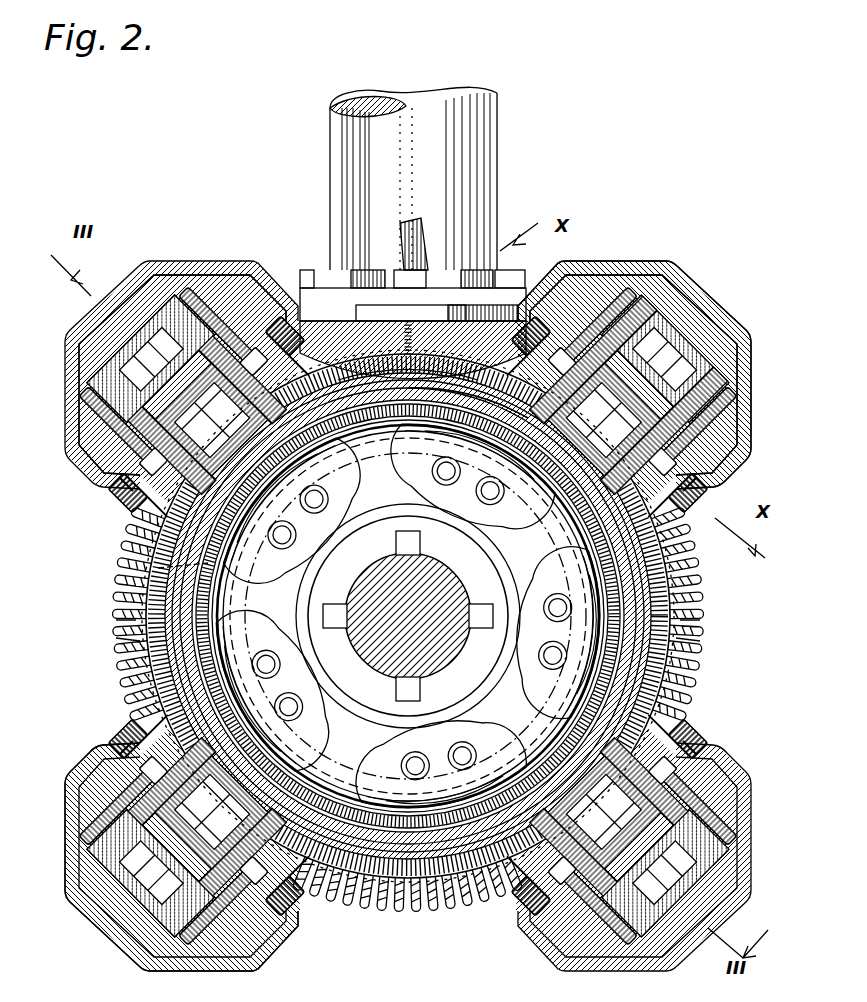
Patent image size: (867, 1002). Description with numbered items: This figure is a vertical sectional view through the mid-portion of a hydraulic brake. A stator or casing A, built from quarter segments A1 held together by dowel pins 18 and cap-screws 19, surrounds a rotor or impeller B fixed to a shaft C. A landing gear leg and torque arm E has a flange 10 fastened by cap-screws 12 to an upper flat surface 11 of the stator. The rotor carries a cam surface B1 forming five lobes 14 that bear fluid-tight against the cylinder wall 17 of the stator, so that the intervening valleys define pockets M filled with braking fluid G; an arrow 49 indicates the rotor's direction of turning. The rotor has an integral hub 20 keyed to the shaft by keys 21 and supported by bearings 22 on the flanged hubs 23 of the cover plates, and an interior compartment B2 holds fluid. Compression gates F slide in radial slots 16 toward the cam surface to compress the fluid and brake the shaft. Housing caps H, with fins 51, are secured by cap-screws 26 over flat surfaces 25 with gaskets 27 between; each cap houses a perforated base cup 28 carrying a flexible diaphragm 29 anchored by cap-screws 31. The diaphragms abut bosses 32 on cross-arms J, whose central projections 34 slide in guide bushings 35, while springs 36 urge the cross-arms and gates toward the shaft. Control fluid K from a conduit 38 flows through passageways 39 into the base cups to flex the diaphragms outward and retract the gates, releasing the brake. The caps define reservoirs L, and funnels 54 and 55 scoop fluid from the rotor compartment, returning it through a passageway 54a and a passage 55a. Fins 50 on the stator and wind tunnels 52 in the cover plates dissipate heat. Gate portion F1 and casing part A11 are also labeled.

The landing gear leg and torque arm E is at (490, 128).
The conduit 38 is at (398, 222).
The flange 10 is at (295, 280).
The upper flat surface 11 is at (420, 305).
The cap-screws 12 is at (515, 270).
The lobes 14 is at (150, 690).
The radially-extending slots 16 is at (408, 603).
The cylinder wall 17 is at (178, 630).
The dowel pins 18 is at (660, 505).
The cap-screws 19 is at (132, 535).
The sleeve or hub 20 is at (480, 555).
The keys 21 is at (388, 683).
The bearings 22 is at (310, 528).
The flanged hubs 23 is at (320, 712).
The flat surfaces 25 is at (112, 490).
The cap-screws 26 is at (100, 475).
The gaskets 27 is at (735, 452).
The perforated base cups 28 is at (715, 445).
The flexible diaphragms 29 is at (100, 400).
The cap-screws 31 is at (248, 262).
The bosses 32 is at (432, 834).
The central projections 34 is at (110, 300).
The guide bushings 35 is at (100, 318).
The springs 36 is at (100, 355).
The passageways 39 is at (165, 600).
The arrow 49 is at (420, 382).
The fins 50 is at (690, 575).
The fins 51 is at (152, 260).
The wind tunnels 52 is at (415, 639).
The funnel 54 is at (330, 470).
The passageway 54a is at (100, 372).
The funnel 55 is at (468, 477).
The passage 55a is at (546, 574).
The stator or casing A is at (108, 615).
The quarter segments A1 is at (125, 650).
The casing part A11 is at (468, 419).
The rotor or impeller B is at (274, 679).
The cam surface B1 is at (150, 562).
The interior compartment B2 is at (558, 632).
The shaft C is at (415, 612).
The compression gates F is at (372, 623).
The cam slot F1 is at (476, 478).
The braking fluid G is at (405, 620).
The housing caps H is at (180, 253).
The cross-arms J is at (355, 873).
The control fluid K is at (590, 340).
The reservoirs L is at (210, 267).
The pockets M is at (665, 545).